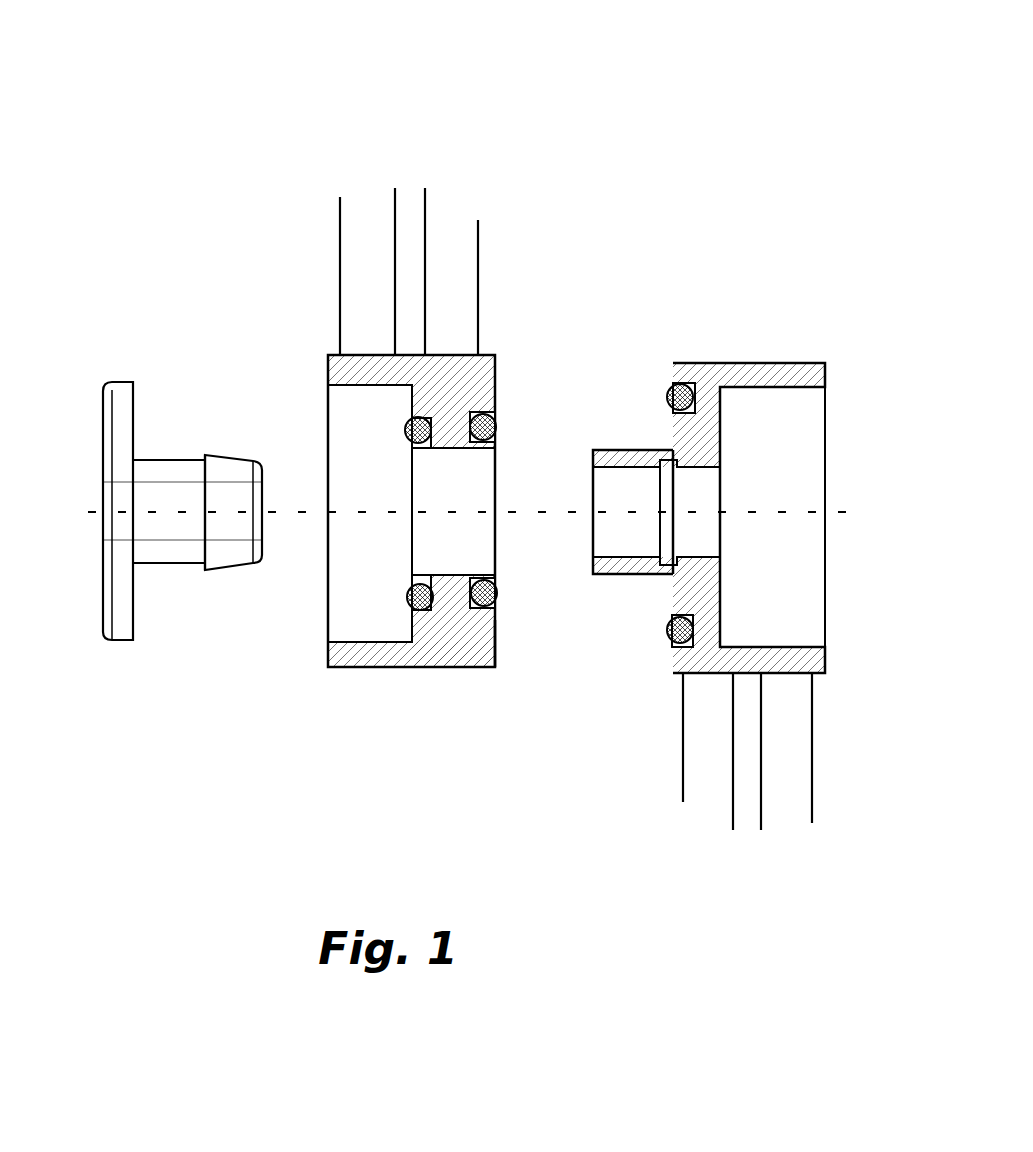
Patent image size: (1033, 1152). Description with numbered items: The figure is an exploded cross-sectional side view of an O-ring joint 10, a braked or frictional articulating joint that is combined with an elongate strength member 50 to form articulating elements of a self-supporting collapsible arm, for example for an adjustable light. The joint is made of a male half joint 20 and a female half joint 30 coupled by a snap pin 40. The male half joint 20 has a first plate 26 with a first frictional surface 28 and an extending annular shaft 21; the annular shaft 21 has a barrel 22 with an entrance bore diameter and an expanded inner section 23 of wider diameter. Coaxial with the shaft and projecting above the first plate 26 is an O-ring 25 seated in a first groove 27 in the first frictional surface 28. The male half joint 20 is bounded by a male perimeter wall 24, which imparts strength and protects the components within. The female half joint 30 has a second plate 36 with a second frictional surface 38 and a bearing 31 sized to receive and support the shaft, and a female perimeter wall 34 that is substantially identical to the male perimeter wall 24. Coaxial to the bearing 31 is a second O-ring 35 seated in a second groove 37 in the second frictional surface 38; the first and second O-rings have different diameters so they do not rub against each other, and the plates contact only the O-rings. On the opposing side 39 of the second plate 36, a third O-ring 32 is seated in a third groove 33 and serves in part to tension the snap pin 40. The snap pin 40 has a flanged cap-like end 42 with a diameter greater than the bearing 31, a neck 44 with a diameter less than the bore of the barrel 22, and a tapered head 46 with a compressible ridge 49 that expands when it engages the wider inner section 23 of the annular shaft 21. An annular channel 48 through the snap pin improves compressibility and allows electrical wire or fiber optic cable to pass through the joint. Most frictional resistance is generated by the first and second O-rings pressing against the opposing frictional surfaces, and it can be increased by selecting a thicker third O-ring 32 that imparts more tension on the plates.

The O-ring joint 10 is at (585, 163).
The male half joint 20 is at (757, 345).
The annular shaft 21 is at (633, 567).
The barrel 22 is at (656, 512).
The expanded inner section 23 is at (665, 563).
The male perimeter wall 24 is at (795, 383).
The O-ring 25 is at (668, 393).
The first plate 26 is at (708, 432).
The first groove 27 is at (695, 415).
The first frictional surface 28 is at (676, 384).
The female half joint 30 is at (502, 348).
The bearing 31 is at (455, 575).
The third O-ring 32 is at (410, 437).
The third groove 33 is at (430, 420).
The female perimeter wall 34 is at (355, 648).
The second O-ring 35 is at (500, 428).
The second plate 36 is at (458, 625).
The second groove 37 is at (487, 412).
The second frictional surface 38 is at (495, 658).
The opposing side 39 is at (410, 632).
The snap pin 40 is at (158, 340).
The flanged cap-like end 42 is at (102, 628).
The neck 44 is at (158, 563).
The head 46 is at (232, 498).
The annular channel 48 is at (102, 503).
The compressible ridge 49 is at (205, 456).
The elongate strength member 50 is at (365, 258).